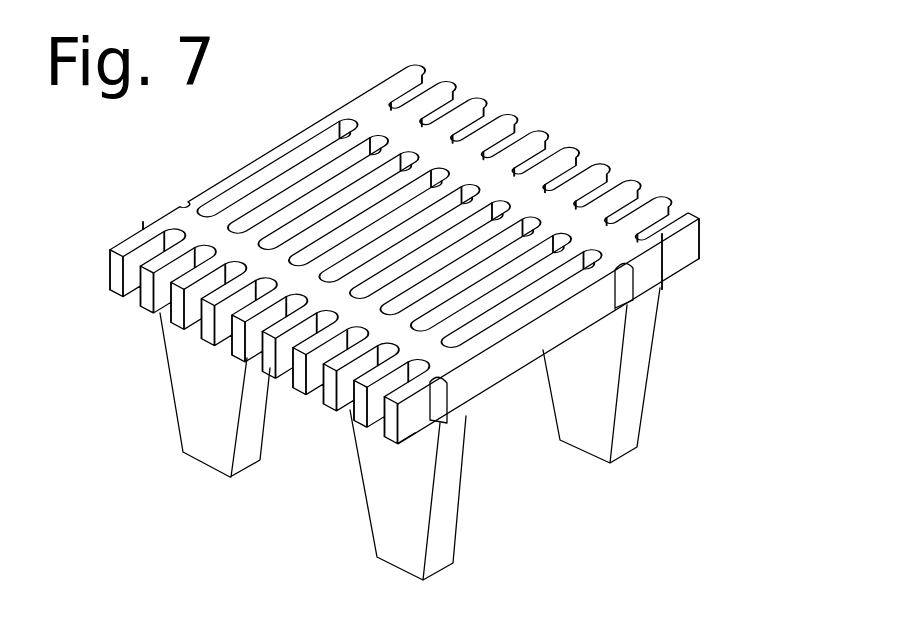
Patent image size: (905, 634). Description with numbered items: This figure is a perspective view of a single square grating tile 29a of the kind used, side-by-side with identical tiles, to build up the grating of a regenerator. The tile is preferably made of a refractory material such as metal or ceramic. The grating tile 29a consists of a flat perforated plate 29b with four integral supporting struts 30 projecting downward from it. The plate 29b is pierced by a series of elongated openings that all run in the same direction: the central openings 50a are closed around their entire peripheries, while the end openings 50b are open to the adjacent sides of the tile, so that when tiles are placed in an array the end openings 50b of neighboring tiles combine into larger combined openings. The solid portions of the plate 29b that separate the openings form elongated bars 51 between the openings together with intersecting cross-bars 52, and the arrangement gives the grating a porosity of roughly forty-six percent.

The grating tile 29a is at (704, 388).
The flat perforated plate 29b is at (650, 193).
The supporting struts 30 is at (210, 447).
The central openings 50a is at (237, 197).
The end openings 50b is at (130, 268).
The elongated bars 51 is at (467, 103).
The cross-bars 52 is at (660, 245).